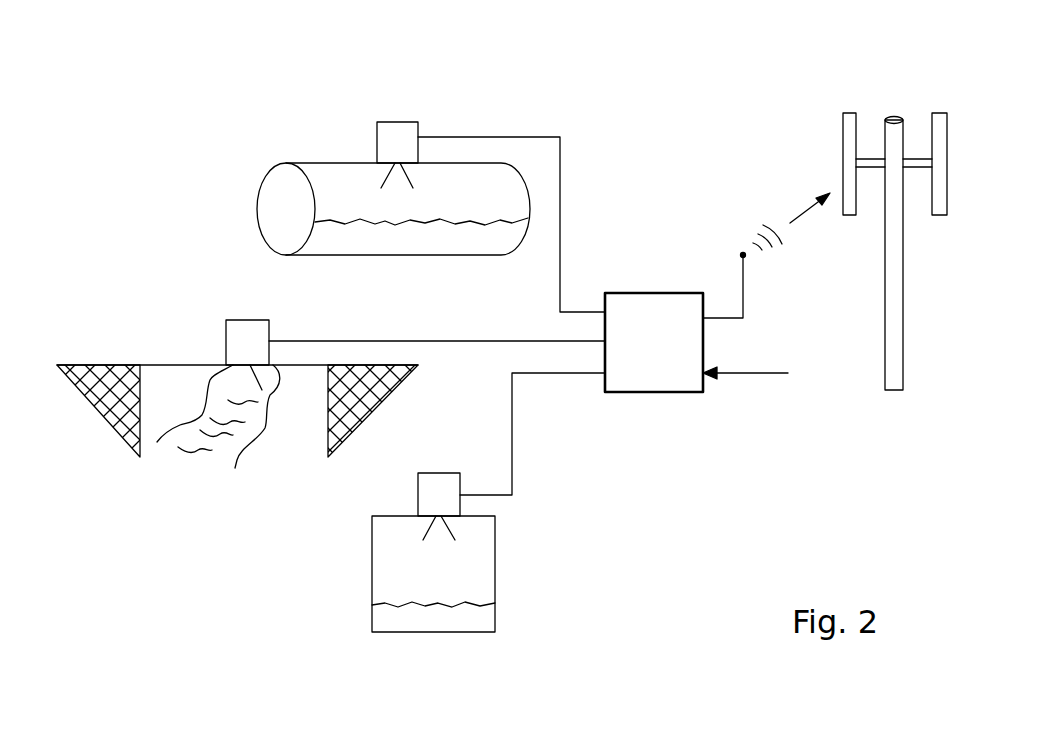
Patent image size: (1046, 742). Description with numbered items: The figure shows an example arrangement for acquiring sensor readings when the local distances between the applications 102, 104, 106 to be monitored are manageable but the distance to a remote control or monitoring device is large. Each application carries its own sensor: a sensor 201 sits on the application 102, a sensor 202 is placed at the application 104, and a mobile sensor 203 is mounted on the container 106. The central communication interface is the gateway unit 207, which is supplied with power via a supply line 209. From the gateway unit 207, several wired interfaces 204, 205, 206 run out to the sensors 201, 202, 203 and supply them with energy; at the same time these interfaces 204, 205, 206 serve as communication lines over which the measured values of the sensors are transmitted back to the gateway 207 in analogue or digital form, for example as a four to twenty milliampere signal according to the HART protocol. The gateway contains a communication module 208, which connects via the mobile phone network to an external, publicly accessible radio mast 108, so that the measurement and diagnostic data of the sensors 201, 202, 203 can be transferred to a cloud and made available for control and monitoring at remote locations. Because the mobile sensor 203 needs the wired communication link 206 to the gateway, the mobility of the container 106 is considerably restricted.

The application 102 is at (250, 207).
The application 104 is at (172, 447).
The container 106 is at (372, 570).
The radio mast 108 is at (893, 115).
The sensor 201 is at (377, 125).
The sensor 202 is at (226, 333).
The mobile sensor 203 is at (418, 500).
The wired interface 204 is at (495, 136).
The wired interface 205 is at (440, 341).
The wired communication link 206 is at (515, 425).
The gateway unit 207 is at (672, 293).
The communication module 208 is at (745, 285).
The supply line 209 is at (762, 376).